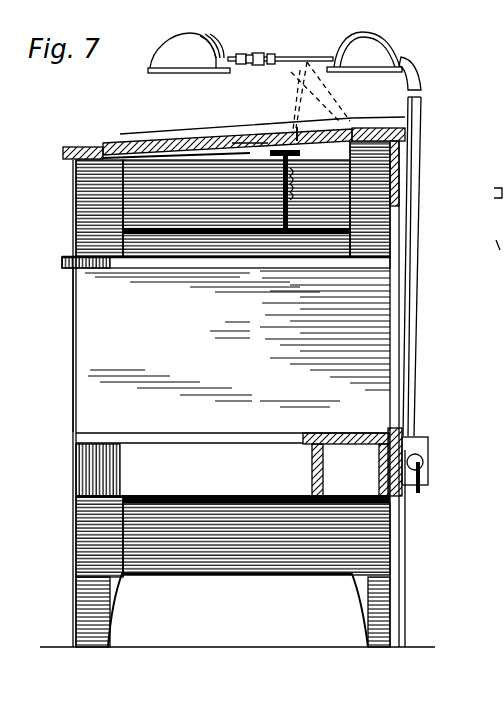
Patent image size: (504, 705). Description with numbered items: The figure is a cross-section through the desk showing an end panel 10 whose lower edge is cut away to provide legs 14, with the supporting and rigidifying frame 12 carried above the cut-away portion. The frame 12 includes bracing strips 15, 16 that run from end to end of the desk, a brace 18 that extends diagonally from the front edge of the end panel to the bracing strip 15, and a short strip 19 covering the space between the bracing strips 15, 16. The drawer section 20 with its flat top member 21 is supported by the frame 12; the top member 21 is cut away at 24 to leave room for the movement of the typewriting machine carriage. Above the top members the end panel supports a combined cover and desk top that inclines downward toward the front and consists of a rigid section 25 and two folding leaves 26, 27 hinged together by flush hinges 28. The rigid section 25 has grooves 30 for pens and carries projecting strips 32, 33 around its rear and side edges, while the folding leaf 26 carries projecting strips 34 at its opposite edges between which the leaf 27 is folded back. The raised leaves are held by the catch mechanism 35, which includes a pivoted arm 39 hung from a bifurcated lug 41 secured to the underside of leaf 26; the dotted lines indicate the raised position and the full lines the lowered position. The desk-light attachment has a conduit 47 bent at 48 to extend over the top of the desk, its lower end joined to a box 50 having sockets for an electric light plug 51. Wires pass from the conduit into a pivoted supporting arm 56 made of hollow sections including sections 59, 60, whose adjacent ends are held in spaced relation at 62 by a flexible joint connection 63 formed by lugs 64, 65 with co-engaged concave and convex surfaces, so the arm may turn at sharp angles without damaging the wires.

The end panel 10 is at (73, 234).
The supporting and rigidifying frame 12 is at (358, 490).
The legs 14 is at (98, 607).
The bracing strip 15 is at (318, 496).
The bracing strip 16 is at (385, 496).
The brace 18 is at (203, 452).
The short strip 19 is at (334, 440).
The drawer section 20 is at (73, 394).
The flat top member 21 is at (288, 268).
The cut-away portion 24 is at (353, 199).
The rigid section 25 is at (368, 192).
The folding leaf 26 is at (203, 188).
The folding leaf 27 is at (128, 208).
The flush hinges 28 is at (222, 141).
The grooves 30 is at (305, 187).
The projecting strip 32 is at (403, 119).
The projecting strip 33 is at (373, 128).
The projecting strips 34 is at (232, 143).
The catch mechanism 35 is at (302, 219).
The pivoted arm 39 is at (263, 194).
The bifurcated lug 41 is at (282, 150).
The conduit 47 is at (406, 398).
The bend 48 is at (406, 62).
The box 50 is at (426, 444).
The electric light plug 51 is at (424, 462).
The pivoted supporting arm 56 is at (335, 55).
The arm section 59 is at (270, 58).
The arm section 60 is at (225, 56).
The space 62 is at (256, 53).
The flexible joint connection 63 is at (300, 66).
The lug 64 is at (262, 64).
The lug 65 is at (240, 64).